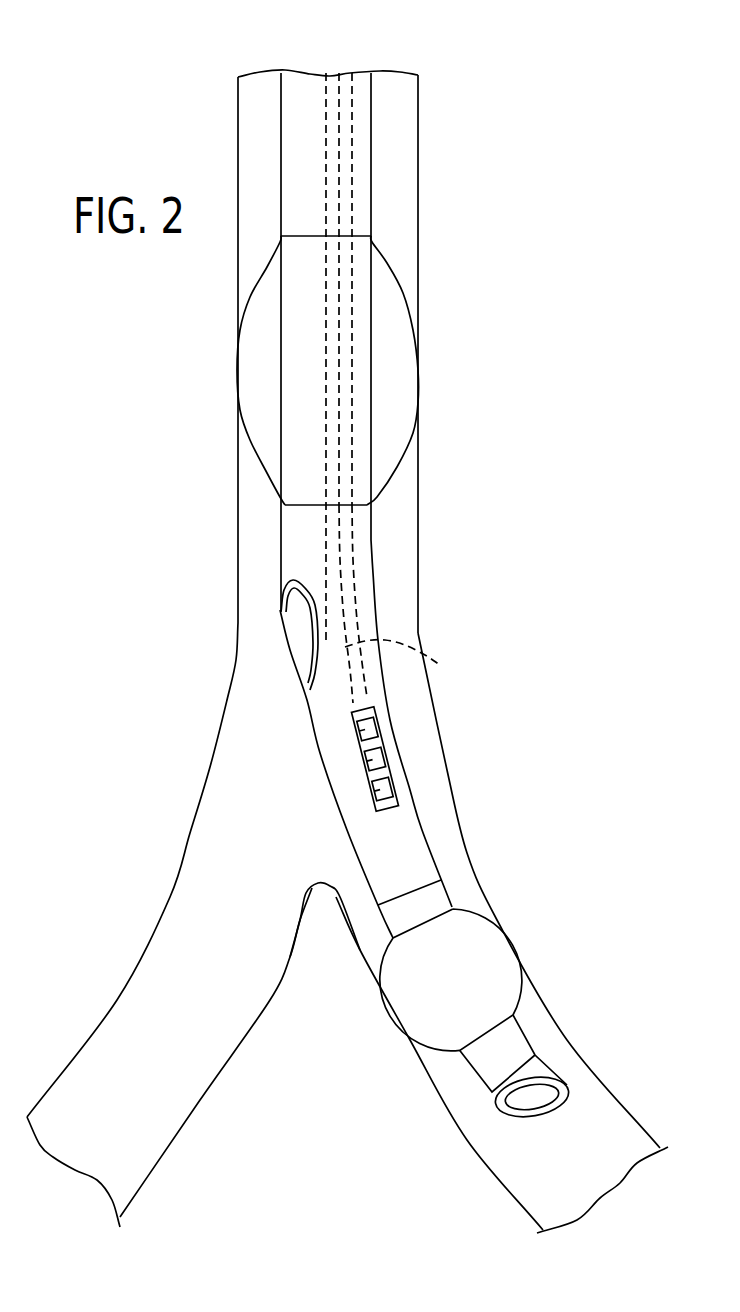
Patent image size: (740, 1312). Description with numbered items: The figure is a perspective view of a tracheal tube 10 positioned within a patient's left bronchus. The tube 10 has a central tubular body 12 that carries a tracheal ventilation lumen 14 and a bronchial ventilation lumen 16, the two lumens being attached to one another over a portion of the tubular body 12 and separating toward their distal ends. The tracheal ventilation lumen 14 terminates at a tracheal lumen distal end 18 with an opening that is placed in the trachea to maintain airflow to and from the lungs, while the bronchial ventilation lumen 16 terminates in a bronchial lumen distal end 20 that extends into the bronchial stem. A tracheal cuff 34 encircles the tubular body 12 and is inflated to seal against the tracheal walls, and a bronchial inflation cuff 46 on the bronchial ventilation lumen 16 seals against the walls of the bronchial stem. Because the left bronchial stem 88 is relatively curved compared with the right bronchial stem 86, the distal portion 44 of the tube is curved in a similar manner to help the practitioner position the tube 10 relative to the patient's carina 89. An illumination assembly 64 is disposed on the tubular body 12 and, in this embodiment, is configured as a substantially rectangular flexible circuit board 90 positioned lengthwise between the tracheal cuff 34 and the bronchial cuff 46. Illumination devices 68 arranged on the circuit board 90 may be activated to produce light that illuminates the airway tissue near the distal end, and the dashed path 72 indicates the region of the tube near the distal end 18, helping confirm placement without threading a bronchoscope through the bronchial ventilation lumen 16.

The tracheal tube 10 is at (197, 69).
The central tubular body 12 is at (375, 572).
The tracheal ventilation lumen 14 is at (305, 73).
The bronchial ventilation lumen 16 is at (362, 73).
The tracheal lumen distal end 18 is at (276, 635).
The bronchial lumen distal end 20 is at (541, 1129).
The tracheal cuff 34 is at (262, 458).
The distal portion 44 is at (371, 917).
The bronchial inflation cuff 46 is at (423, 1048).
The illumination assembly 64 is at (409, 742).
The illumination devices 68 is at (375, 793).
The sensor lead path 72 is at (408, 663).
The right bronchial stem 86 is at (203, 875).
The left bronchial stem 88 is at (450, 858).
The carina 89 is at (307, 886).
The flexible circuit board 90 is at (388, 758).